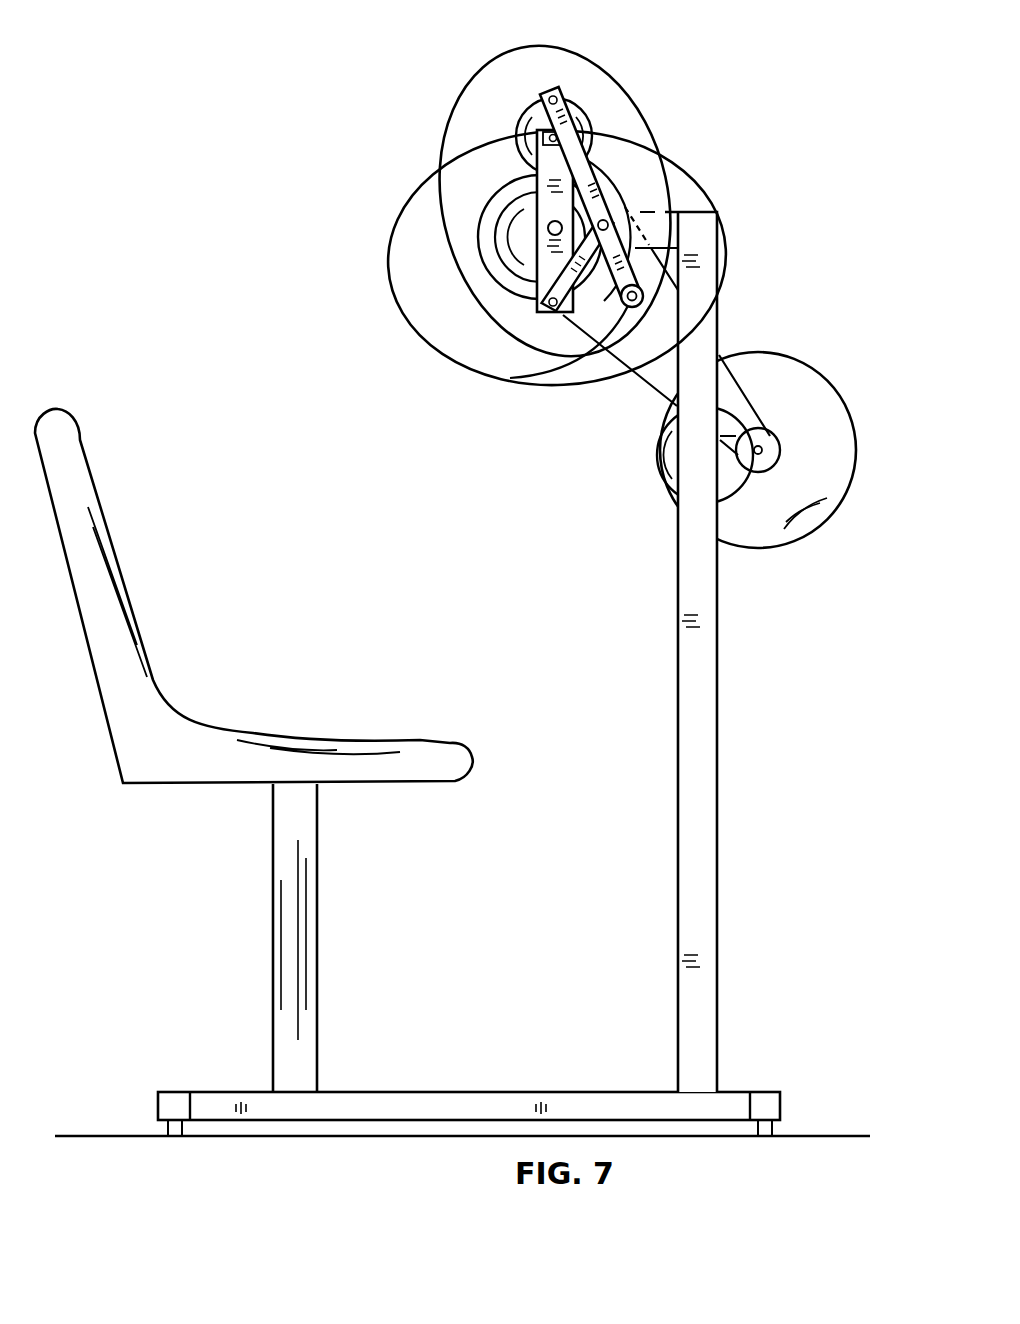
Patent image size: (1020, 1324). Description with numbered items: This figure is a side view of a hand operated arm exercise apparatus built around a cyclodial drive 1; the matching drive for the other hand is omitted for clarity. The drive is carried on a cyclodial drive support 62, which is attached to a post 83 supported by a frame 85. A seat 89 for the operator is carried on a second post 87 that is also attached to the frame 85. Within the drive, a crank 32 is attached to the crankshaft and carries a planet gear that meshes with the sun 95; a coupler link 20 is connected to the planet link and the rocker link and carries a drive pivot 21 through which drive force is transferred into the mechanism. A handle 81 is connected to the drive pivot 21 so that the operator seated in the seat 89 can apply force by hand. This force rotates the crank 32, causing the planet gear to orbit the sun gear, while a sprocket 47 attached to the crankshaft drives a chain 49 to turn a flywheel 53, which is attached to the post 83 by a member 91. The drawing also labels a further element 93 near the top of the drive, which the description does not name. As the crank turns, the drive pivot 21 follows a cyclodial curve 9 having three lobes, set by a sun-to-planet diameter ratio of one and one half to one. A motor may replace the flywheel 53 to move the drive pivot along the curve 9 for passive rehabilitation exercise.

The cyclodial drive 1 is at (637, 62).
The cyclodial curve 9 is at (455, 108).
The coupler link 20 is at (593, 160).
The drive pivot 21 is at (640, 298).
The crank 32 is at (536, 226).
The sprocket 47 is at (487, 197).
The chain 49 is at (643, 386).
The flywheel 53 is at (767, 353).
The cyclodial drive support 62 is at (655, 212).
The handle 81 is at (628, 308).
The post 83 is at (678, 883).
The frame 85 is at (433, 1092).
The post 87 is at (273, 933).
The seat 89 is at (100, 503).
The member 91 is at (725, 462).
The small pulley 93 is at (535, 104).
The sun 95 is at (512, 275).